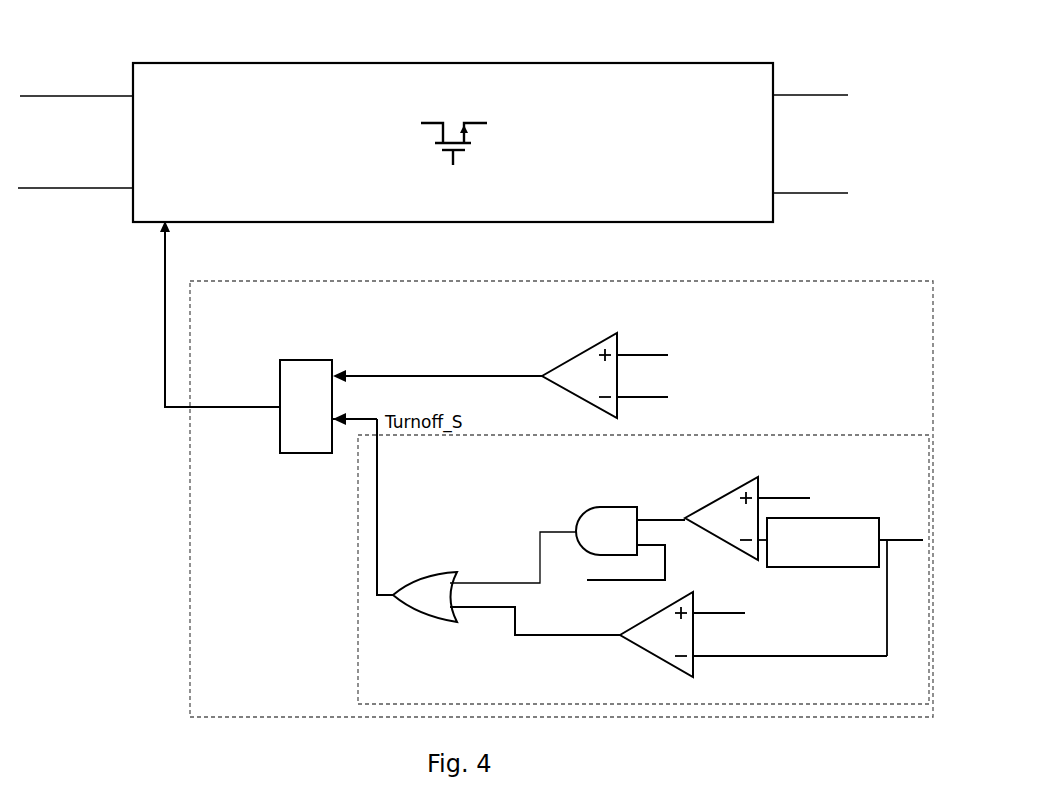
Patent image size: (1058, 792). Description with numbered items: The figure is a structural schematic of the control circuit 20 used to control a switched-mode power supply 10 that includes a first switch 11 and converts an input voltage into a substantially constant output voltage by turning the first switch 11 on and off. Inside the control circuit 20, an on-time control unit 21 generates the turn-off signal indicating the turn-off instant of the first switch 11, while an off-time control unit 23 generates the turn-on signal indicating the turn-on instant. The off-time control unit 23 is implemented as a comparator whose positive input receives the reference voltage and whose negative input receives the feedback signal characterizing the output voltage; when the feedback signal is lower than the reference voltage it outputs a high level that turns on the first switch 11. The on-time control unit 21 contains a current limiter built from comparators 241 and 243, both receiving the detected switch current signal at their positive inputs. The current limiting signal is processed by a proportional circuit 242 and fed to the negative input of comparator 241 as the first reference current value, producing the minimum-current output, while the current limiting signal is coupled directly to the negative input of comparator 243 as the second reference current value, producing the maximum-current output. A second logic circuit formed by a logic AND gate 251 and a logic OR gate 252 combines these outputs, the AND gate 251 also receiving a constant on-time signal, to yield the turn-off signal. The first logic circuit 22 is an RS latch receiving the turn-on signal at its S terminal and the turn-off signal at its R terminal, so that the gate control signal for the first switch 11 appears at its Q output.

The switched-mode power supply 10 is at (713, 57).
The first switch 11 is at (473, 150).
The control circuit 20 is at (561, 499).
The on-time control unit 21 is at (643, 569).
The first logic circuit 22 is at (322, 360).
The off-time control unit 23 is at (552, 366).
The comparator 241 is at (735, 483).
The proportional circuit 242 is at (828, 518).
The comparator 243 is at (653, 657).
The logic AND gate 251 is at (610, 505).
The logic OR gate 252 is at (415, 570).